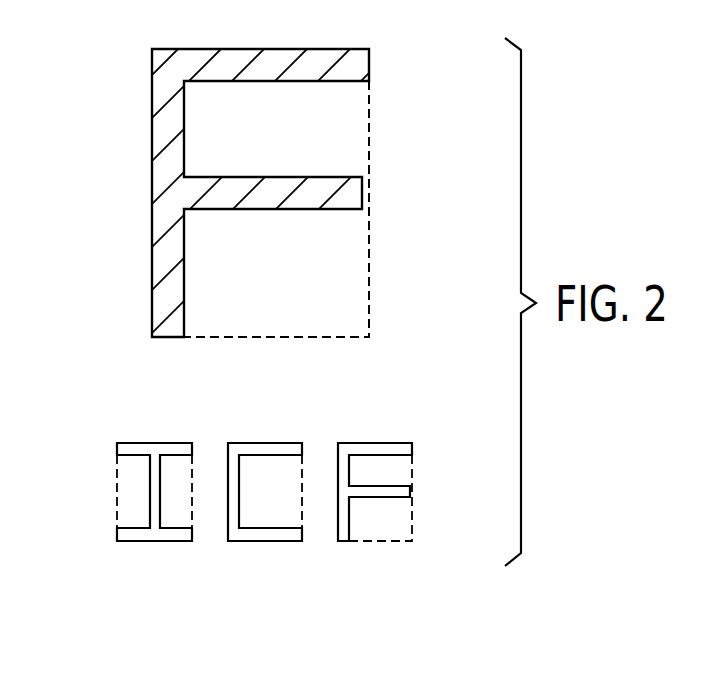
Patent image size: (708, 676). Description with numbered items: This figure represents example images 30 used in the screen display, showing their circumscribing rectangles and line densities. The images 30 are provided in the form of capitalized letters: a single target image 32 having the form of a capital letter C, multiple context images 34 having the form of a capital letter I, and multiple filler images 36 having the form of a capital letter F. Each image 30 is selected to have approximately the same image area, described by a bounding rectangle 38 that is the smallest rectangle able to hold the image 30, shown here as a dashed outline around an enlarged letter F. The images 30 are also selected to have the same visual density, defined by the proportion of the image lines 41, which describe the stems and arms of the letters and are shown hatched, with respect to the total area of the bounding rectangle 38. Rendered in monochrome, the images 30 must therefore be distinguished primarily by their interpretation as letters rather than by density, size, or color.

The images 30 is at (242, 222).
The target image 32 is at (262, 556).
The context images 34 is at (152, 556).
The filler images 36 is at (370, 556).
The bounding rectangle 38 is at (370, 120).
The image lines 41 is at (241, 49).